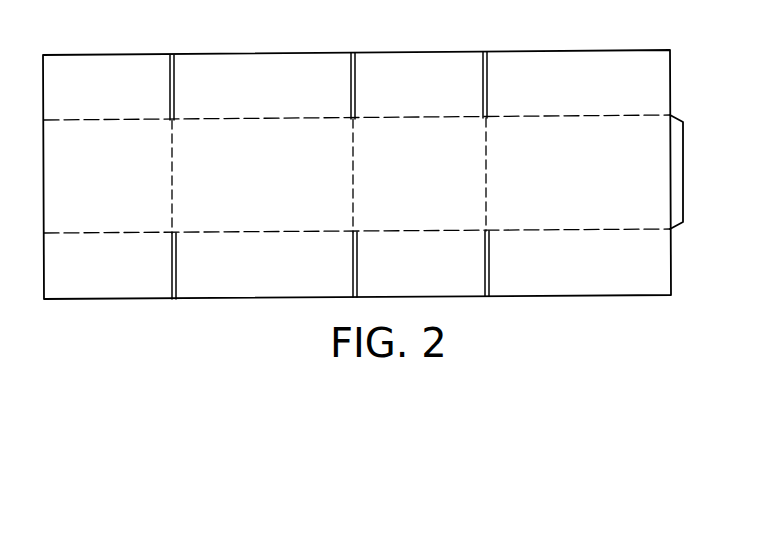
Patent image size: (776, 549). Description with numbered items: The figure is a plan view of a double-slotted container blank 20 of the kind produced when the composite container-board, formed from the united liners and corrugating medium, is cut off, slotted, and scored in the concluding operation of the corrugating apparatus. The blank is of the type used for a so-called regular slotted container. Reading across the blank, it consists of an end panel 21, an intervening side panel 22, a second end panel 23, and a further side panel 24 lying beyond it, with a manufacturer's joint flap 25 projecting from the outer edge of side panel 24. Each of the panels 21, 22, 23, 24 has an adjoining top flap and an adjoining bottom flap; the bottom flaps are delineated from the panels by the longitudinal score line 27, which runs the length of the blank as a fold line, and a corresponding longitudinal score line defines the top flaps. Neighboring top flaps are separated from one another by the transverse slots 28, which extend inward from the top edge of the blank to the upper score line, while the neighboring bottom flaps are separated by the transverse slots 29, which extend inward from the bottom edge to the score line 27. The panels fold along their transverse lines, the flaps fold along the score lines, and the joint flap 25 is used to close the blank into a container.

The carton blank 20 is at (205, 120).
The end panel 21 is at (102, 186).
The side panel 22 is at (270, 191).
The end panel 23 is at (423, 175).
The side panel 24 is at (573, 189).
The manufacturer's joint flap 25 is at (683, 183).
The longitudinal score line 27 is at (403, 230).
The transverse slot 28 is at (171, 53).
The transverse slot 29 is at (175, 300).